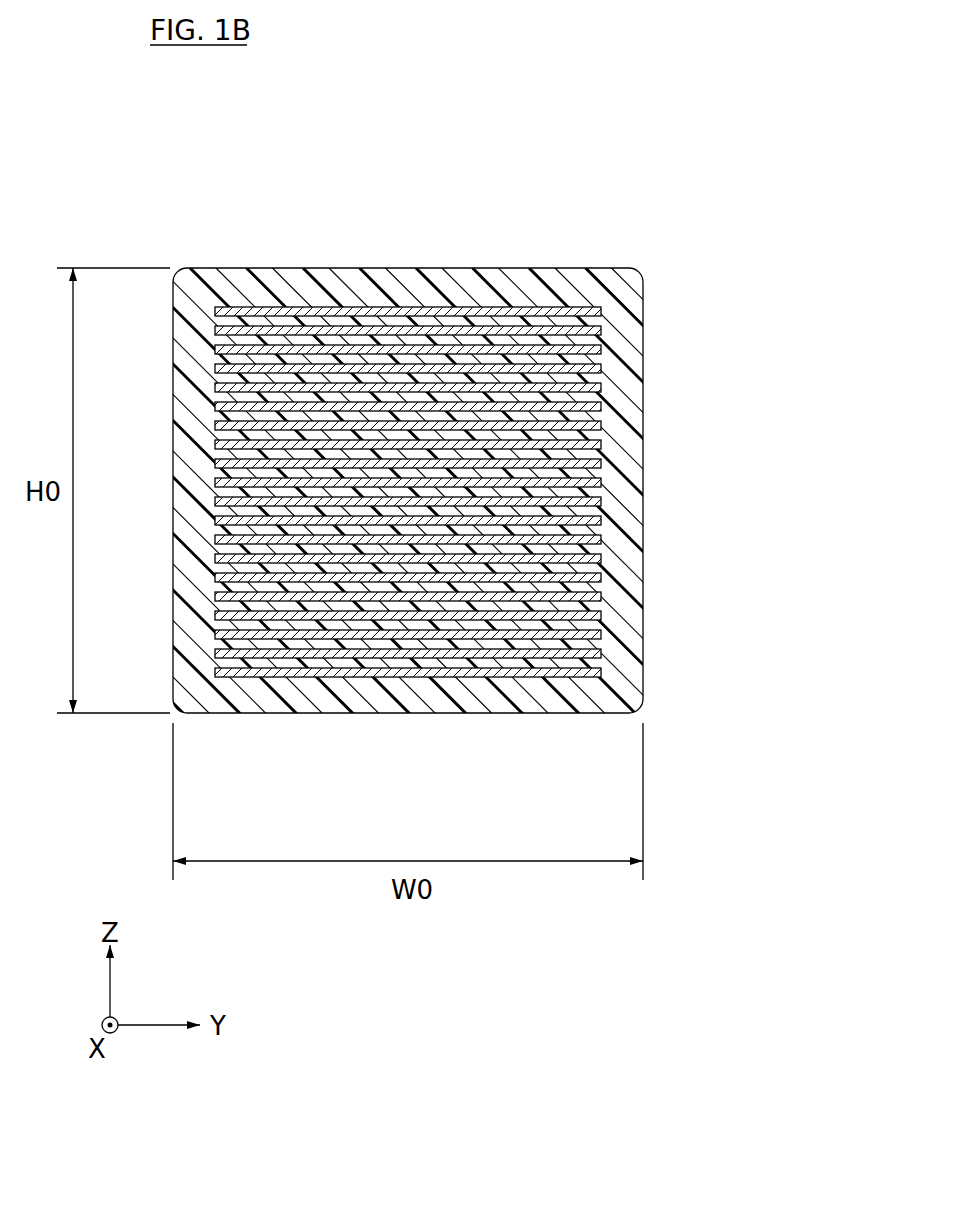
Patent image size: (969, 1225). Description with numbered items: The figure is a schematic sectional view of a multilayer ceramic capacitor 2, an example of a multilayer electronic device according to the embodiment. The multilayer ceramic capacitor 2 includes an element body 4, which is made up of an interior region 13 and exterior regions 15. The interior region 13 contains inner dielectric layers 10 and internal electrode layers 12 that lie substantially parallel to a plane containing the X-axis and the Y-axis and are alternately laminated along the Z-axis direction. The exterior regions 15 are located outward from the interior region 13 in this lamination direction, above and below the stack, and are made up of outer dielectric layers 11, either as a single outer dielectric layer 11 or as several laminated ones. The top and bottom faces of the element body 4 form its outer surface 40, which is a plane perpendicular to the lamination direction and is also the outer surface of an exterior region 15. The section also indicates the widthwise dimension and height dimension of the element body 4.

The multilayer ceramic capacitor 2 is at (607, 243).
The element body 4 is at (377, 278).
The inner dielectric layers 10 is at (597, 318).
The outer dielectric layers 11 is at (552, 278).
The internal electrode layers 12 is at (587, 310).
The interior region 13 is at (170, 309).
The exterior regions 15 is at (170, 271).
The outer surface 40 is at (515, 268).